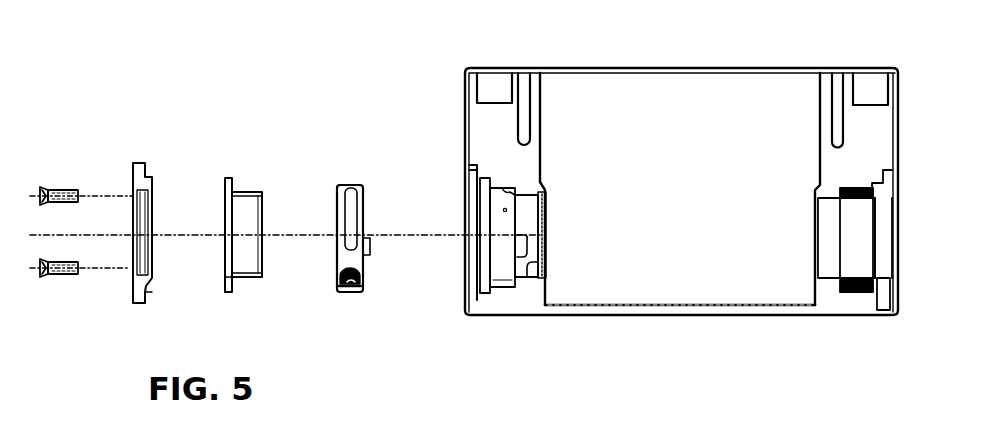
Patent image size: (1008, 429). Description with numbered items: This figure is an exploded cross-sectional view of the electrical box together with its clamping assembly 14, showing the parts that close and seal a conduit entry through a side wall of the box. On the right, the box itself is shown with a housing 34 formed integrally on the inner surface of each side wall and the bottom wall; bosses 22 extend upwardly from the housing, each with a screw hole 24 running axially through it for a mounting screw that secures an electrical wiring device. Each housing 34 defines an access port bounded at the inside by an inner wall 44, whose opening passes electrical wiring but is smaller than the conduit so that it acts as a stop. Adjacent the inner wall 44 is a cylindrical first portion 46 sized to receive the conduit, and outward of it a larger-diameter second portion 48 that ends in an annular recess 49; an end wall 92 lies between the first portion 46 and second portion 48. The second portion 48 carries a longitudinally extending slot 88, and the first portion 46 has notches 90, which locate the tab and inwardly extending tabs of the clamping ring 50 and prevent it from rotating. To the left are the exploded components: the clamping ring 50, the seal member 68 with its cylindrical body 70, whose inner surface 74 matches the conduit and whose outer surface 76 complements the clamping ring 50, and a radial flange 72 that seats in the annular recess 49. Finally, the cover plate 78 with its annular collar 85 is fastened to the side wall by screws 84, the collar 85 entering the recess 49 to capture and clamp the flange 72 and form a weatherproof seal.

The clamping assembly 14 is at (298, 328).
The boss 22 is at (542, 110).
The screw hole 24 is at (528, 70).
The housing 34 is at (558, 144).
The inner wall 44 is at (547, 200).
The first portion 46 is at (527, 263).
The second portion 48 is at (517, 193).
The annular recess 49 is at (470, 194).
The clamping ring 50 is at (366, 302).
The seal member 68 is at (253, 223).
The cylindrical body 70 is at (248, 192).
The flange 72 is at (227, 178).
The inner surface 74 is at (245, 275).
The outer surface 76 is at (250, 285).
The cover plate 78 is at (140, 150).
The screw 84 is at (60, 188).
The annular collar 85 is at (152, 293).
The longitudinally extending slot 88 is at (518, 278).
The notch 90 is at (527, 247).
The end wall 92 is at (513, 277).